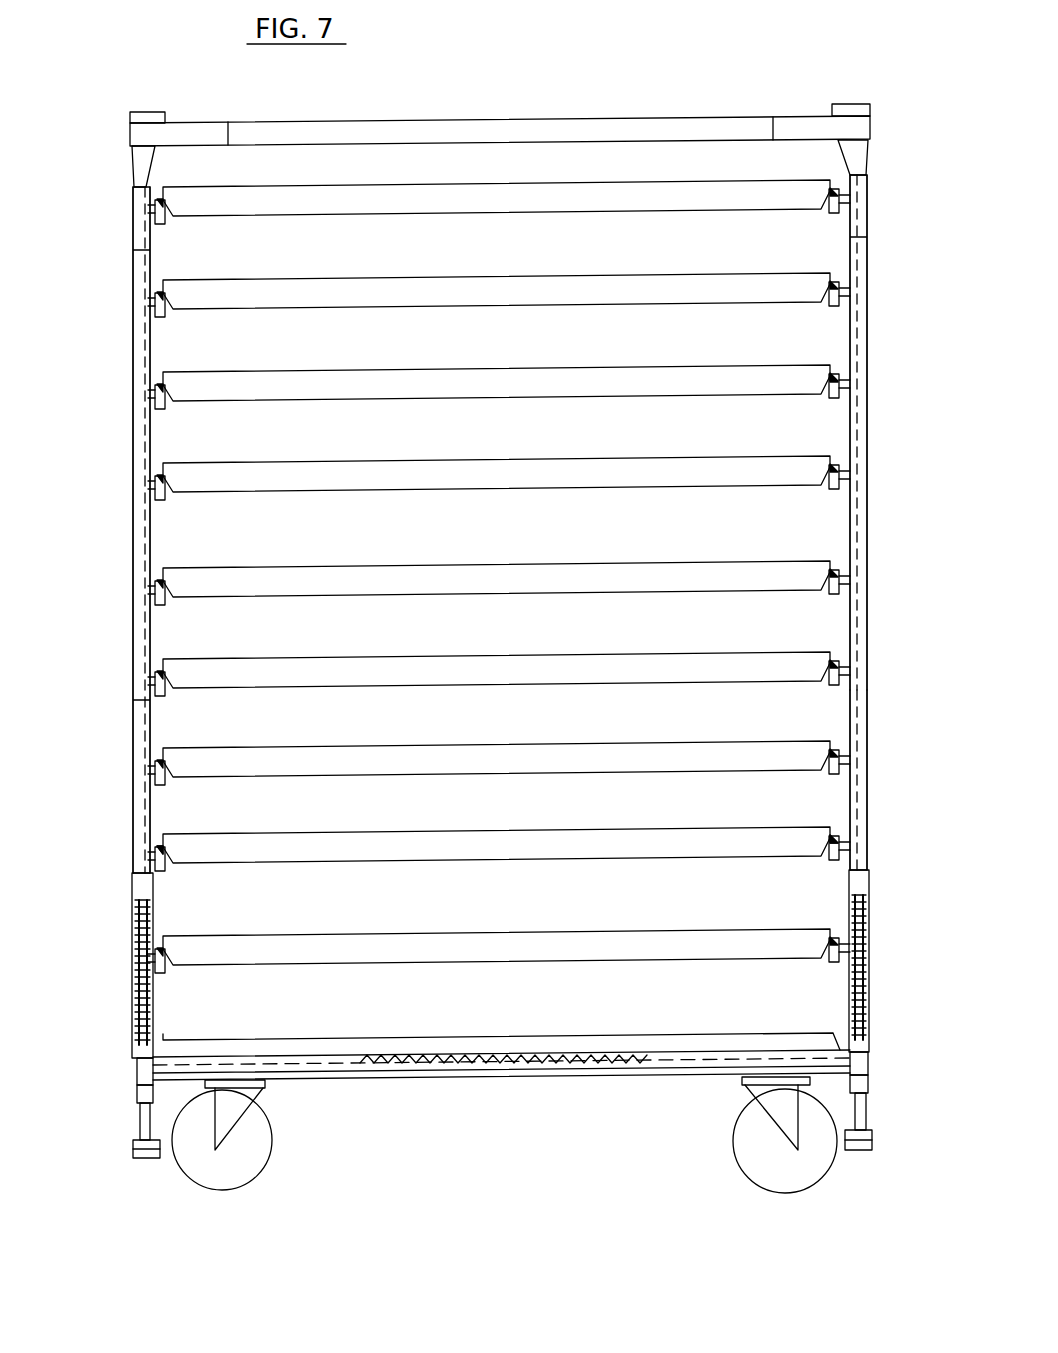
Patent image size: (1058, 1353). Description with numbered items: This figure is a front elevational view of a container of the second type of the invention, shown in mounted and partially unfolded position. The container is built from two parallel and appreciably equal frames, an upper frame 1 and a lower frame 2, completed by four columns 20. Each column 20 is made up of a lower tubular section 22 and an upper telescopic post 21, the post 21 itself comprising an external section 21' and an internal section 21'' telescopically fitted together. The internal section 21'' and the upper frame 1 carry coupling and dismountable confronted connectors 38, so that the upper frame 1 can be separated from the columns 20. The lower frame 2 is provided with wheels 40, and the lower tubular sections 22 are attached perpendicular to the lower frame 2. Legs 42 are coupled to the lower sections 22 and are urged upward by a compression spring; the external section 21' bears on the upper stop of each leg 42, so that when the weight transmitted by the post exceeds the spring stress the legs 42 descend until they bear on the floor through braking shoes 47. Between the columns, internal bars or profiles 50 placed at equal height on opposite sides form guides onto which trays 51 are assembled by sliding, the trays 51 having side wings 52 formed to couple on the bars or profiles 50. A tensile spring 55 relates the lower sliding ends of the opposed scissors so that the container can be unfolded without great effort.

The upper frame 1 is at (662, 130).
The lower frame 2 is at (548, 1078).
The column 20 is at (112, 720).
The upper telescopic post 21 is at (104, 530).
The external section 21' is at (898, 780).
The internal section 21'' is at (898, 432).
The lower tubular section 22 is at (138, 985).
The coupling and dismountable confronted connectors 38 is at (858, 205).
The wheels 40 is at (245, 1166).
The legs 42 is at (138, 1114).
The braking shoes 47 is at (133, 1149).
The internal bars or profiles 50 is at (165, 498).
The trays 51 is at (438, 583).
The wings 52 is at (845, 380).
The tensile spring 55 is at (418, 1060).